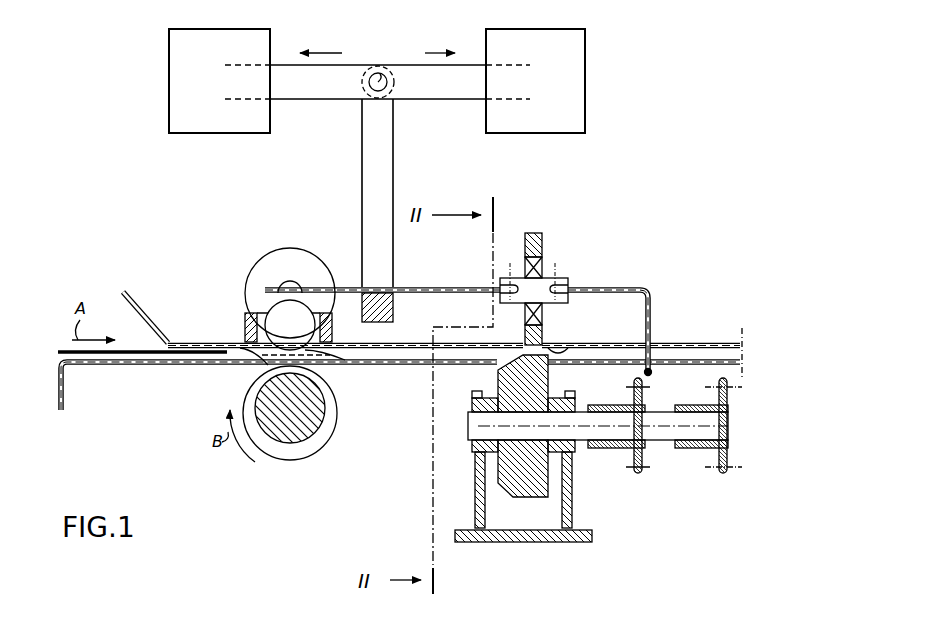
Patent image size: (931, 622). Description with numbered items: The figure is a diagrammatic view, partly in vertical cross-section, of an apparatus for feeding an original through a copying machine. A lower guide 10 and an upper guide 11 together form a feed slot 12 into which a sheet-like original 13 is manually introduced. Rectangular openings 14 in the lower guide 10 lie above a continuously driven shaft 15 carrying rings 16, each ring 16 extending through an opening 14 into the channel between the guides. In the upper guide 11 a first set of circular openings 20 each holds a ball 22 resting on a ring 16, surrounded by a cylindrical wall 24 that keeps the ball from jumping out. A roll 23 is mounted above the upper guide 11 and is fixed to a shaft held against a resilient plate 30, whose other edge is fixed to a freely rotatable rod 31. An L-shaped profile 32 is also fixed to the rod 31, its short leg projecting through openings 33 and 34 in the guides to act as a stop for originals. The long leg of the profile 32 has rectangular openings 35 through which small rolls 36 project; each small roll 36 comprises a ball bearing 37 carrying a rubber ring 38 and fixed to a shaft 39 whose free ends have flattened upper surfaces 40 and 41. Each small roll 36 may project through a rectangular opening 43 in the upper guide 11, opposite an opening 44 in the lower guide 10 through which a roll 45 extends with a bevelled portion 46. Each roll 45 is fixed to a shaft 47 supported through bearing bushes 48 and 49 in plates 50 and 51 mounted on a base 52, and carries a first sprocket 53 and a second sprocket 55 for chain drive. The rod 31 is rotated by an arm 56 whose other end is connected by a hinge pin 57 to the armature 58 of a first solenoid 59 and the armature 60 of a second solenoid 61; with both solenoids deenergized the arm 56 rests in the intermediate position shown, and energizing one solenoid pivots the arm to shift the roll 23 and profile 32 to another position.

The lower guide 10 is at (143, 366).
The upper guide 11 is at (150, 327).
The feed slot 12 is at (424, 330).
The original 13 is at (97, 357).
The rectangular openings 14 is at (255, 370).
The shaft 15 is at (322, 432).
The rings 16 is at (336, 413).
The first set of openings 20 is at (354, 365).
The ball 22 is at (290, 325).
The roll 23 is at (286, 258).
The cylindrical wall 24 is at (245, 325).
The resilient plate 30 is at (345, 295).
The rod 31 is at (393, 317).
The L-shaped profile 32 is at (615, 288).
The opening 33 is at (655, 350).
The opening 34 is at (651, 376).
The rectangular openings 35 is at (553, 280).
The small roll 36 is at (545, 233).
The ball bearing 37 is at (545, 262).
The rubber ring 38 is at (530, 233).
The shaft 39 is at (549, 312).
The flattened upper surface 40 is at (488, 300).
The flattened upper surface 41 is at (566, 294).
The rectangular openings 43 is at (578, 343).
The opening 44 is at (497, 368).
The roll 45 is at (568, 448).
The bevelled portion 46 is at (515, 498).
The shaft 47 is at (662, 440).
The bearing bush 48 is at (473, 452).
The bearing bush 49 is at (573, 452).
The plate 50 is at (475, 492).
The plate 51 is at (573, 510).
The base 52 is at (533, 542).
The first sprocket 53 is at (636, 473).
The second sprocket 55 is at (720, 467).
The arm 56 is at (393, 163).
The hinge pin 57 is at (393, 66).
The armature 58 is at (336, 72).
The first solenoid 59 is at (219, 81).
The armature 60 is at (442, 99).
The second solenoid 61 is at (535, 81).